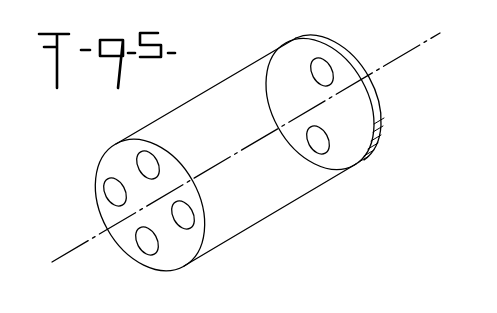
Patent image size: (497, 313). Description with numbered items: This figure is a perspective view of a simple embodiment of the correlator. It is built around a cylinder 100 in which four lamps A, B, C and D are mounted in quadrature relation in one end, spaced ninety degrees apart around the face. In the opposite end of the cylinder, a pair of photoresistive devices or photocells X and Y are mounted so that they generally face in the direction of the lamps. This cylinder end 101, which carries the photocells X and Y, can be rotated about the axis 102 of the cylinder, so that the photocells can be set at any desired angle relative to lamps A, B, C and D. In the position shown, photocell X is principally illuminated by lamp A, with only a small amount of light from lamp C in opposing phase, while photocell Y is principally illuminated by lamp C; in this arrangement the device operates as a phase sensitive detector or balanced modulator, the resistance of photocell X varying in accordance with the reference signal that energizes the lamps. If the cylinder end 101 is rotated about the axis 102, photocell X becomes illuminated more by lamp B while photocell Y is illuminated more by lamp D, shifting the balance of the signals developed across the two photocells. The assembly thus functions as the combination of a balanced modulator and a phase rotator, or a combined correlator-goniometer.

The cylinder 100 is at (193, 100).
The cylinder end 101 is at (358, 70).
The axis 102 is at (74, 249).
The lamp A is at (144, 152).
The lamp B is at (187, 213).
The lamp C is at (146, 247).
The lamp D is at (108, 180).
The photocell X is at (329, 67).
The photocell Y is at (327, 137).